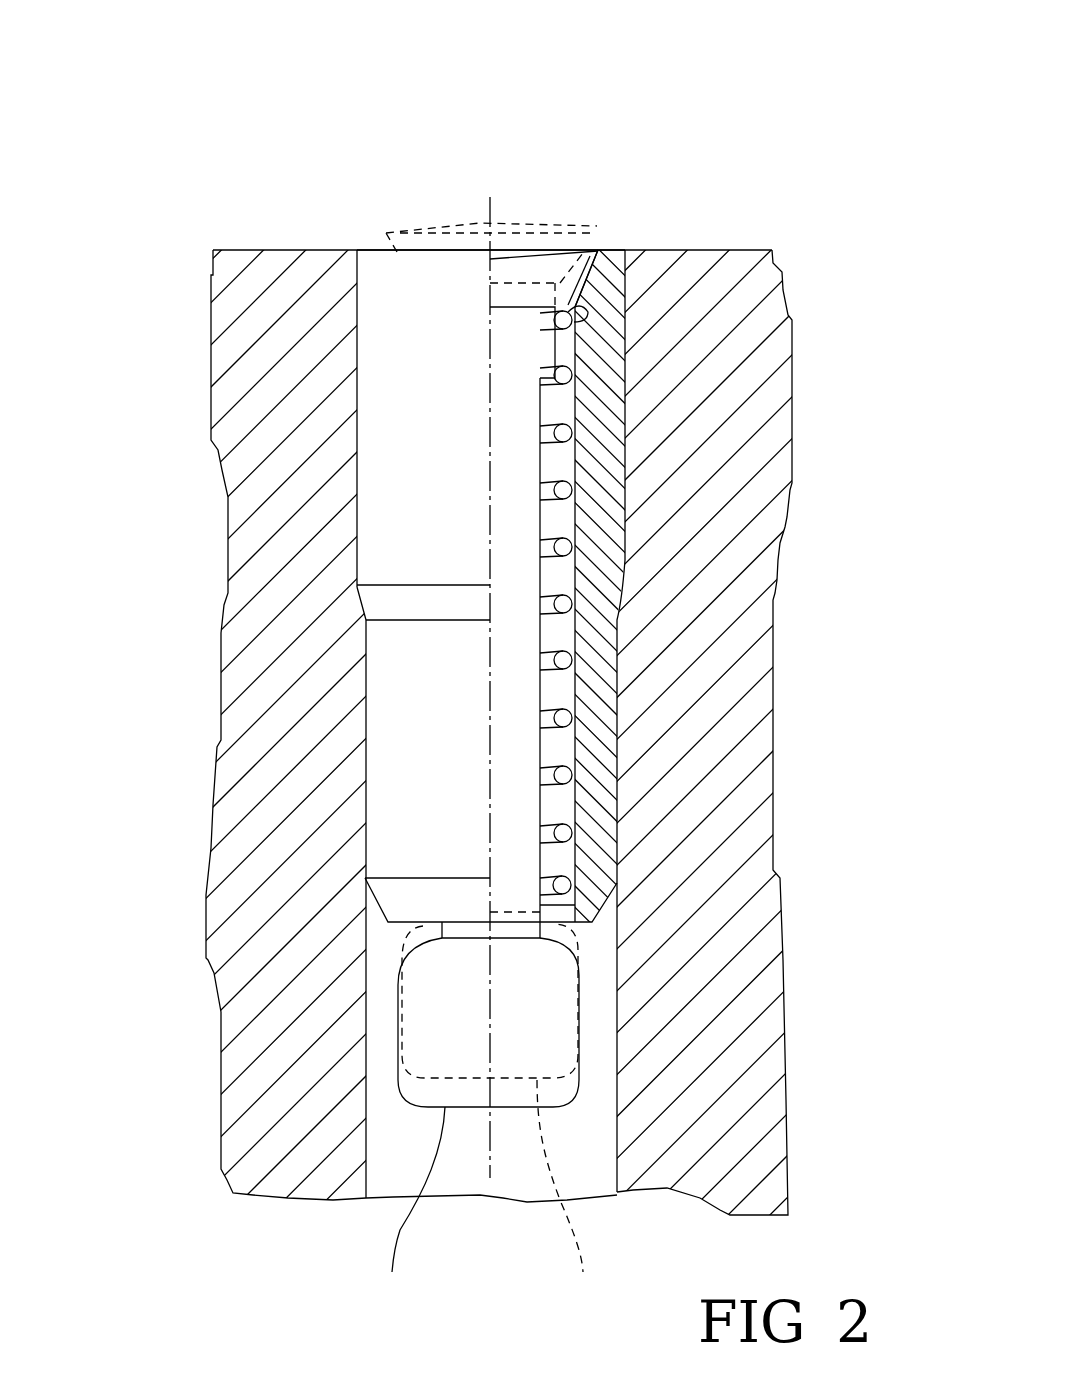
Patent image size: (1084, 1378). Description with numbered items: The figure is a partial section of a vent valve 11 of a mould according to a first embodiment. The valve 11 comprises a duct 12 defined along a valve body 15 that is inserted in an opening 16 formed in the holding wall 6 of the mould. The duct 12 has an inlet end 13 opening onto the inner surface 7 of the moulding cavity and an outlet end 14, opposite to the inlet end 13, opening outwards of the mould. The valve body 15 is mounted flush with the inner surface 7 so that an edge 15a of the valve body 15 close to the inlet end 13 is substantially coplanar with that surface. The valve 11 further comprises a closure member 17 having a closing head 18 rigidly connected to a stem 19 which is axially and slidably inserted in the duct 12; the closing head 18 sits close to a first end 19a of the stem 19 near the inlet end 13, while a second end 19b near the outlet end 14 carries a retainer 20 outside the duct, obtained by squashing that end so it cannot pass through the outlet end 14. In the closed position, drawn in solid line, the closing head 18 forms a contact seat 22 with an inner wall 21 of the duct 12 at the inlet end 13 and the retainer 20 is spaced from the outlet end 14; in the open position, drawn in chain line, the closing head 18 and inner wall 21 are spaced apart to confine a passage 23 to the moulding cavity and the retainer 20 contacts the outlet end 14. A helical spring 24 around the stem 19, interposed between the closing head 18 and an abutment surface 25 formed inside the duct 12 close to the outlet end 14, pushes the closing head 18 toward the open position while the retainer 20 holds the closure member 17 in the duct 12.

The holding wall 6 is at (248, 450).
The inner surface 7 is at (250, 252).
The valve 11 is at (426, 170).
The duct 12 is at (562, 460).
The inlet end 13 is at (611, 230).
The outlet end 14 is at (567, 946).
The valve body 15 is at (374, 357).
The edge 15a is at (373, 250).
The opening 16 is at (357, 523).
The closure member 17 is at (542, 578).
The closing head 18 is at (506, 233).
The stem 19 is at (520, 643).
The first end 19a is at (533, 349).
The second end 19b is at (512, 927).
The retainer 20 is at (487, 1117).
The inner wall 21 is at (570, 292).
The contact seat 22 is at (557, 252).
The passage 23 is at (598, 225).
The helical spring 24 is at (568, 770).
The abutment surface 25 is at (577, 895).